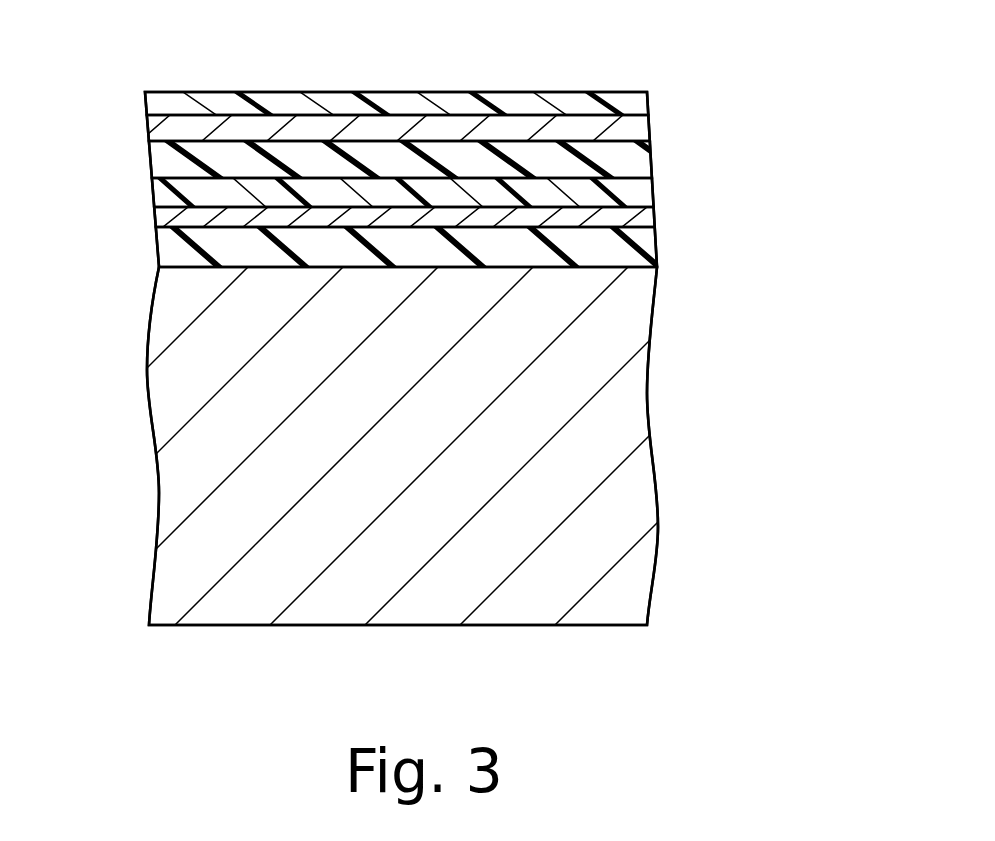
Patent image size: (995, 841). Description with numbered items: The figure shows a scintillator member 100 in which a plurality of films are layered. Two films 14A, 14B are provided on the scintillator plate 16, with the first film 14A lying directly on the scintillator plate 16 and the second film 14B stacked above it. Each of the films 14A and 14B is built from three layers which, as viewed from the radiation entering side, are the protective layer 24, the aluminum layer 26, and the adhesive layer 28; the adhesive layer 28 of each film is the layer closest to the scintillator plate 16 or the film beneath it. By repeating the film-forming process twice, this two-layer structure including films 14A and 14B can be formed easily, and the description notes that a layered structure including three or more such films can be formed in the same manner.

The scintillator member 100 is at (858, 17).
The scintillator plate 16 is at (623, 421).
The protective layer 24 is at (643, 100).
The aluminum layer 26 is at (645, 128).
The adhesive layer 28 is at (655, 160).
The film 14A is at (123, 180).
The film 14B is at (123, 93).